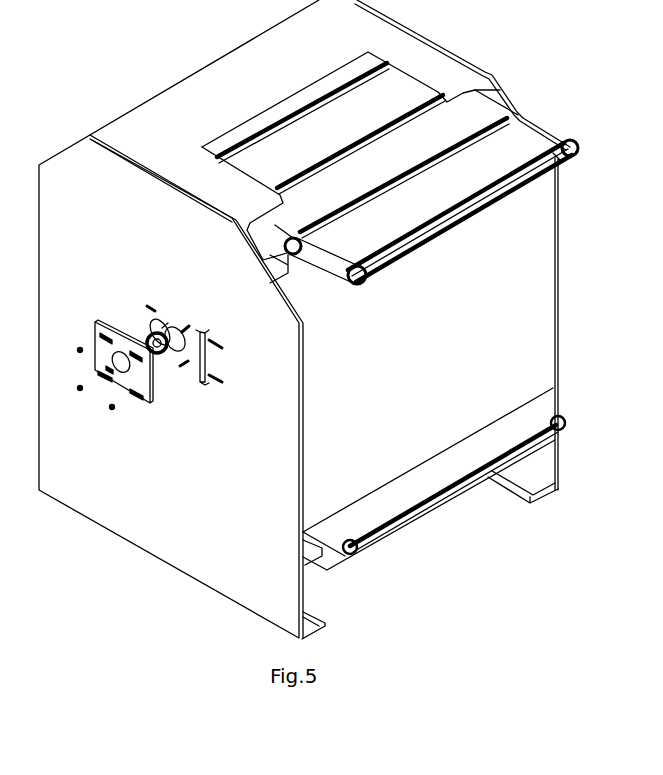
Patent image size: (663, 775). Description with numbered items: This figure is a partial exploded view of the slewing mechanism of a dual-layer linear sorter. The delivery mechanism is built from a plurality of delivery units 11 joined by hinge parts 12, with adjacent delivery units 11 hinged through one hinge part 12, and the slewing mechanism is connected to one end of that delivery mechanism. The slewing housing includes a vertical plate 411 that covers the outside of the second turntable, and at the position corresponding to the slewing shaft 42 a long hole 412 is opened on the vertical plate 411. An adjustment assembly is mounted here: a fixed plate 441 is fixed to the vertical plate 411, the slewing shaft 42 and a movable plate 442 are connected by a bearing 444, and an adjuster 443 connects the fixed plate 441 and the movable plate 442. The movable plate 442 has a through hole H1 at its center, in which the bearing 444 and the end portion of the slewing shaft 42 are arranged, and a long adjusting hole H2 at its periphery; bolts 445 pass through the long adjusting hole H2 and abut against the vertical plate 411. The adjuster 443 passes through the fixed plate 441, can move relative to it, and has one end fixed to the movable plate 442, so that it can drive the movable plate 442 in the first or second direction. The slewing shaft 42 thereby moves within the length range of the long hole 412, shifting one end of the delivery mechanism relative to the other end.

The delivery unit 11 is at (322, 260).
The hinge part 12 is at (400, 258).
The vertical plate 411 is at (290, 453).
The long hole 412 is at (168, 320).
The slewing shaft 42 is at (177, 320).
The fixed plate 441 is at (212, 357).
The movable plate 442 is at (112, 327).
The adjuster 443 is at (218, 387).
The bearing 444 is at (158, 360).
The bolt 445 is at (147, 302).
The through hole H1 is at (123, 373).
The long adjusting hole H2 is at (112, 367).